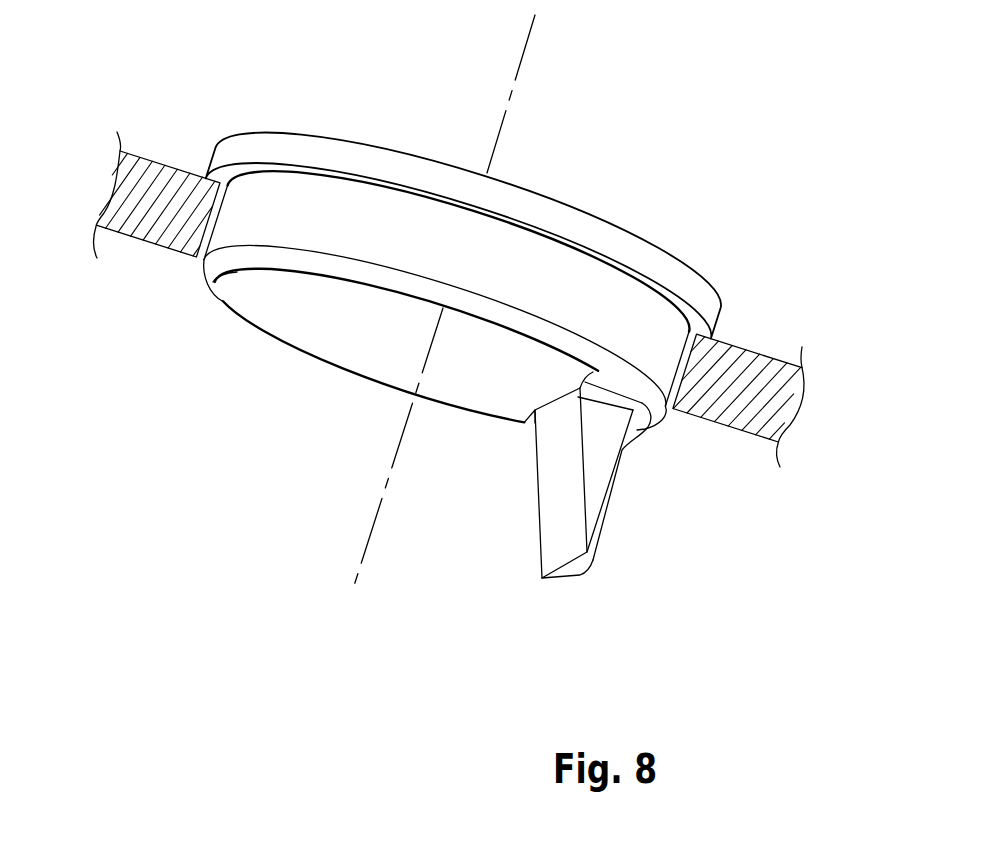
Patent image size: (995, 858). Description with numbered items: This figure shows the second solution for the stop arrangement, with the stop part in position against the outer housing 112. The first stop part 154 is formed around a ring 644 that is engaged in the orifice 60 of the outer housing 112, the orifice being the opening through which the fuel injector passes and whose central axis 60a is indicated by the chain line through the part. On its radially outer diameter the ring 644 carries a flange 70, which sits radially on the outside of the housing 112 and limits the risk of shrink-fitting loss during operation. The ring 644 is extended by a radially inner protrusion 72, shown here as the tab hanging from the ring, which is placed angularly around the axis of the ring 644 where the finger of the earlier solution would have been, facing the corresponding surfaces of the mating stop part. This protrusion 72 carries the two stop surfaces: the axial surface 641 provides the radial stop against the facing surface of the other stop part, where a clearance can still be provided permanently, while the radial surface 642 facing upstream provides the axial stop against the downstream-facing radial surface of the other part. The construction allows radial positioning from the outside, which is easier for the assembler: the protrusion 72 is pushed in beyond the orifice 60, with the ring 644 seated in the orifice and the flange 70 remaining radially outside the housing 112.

The orifice 60 is at (690, 373).
The axis of the orifice 60a is at (370, 543).
The flange 70 is at (606, 240).
The radially inner protrusion 72 is at (600, 469).
The outer housing 112 is at (167, 183).
The first stop part 154 is at (675, 231).
The axial surface 641 is at (568, 574).
The radial surface facing upstream 642 is at (552, 505).
The ring 644 is at (243, 220).